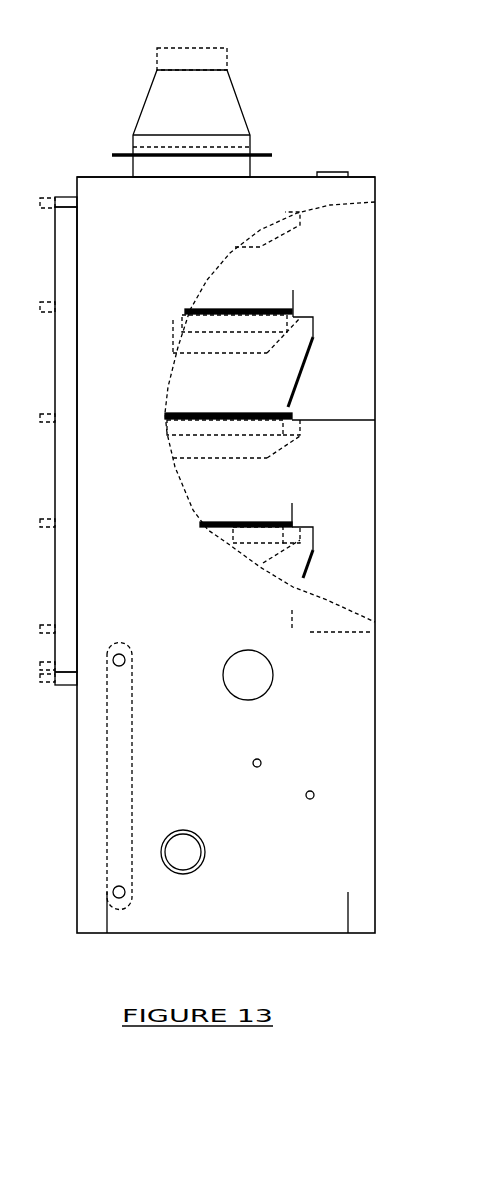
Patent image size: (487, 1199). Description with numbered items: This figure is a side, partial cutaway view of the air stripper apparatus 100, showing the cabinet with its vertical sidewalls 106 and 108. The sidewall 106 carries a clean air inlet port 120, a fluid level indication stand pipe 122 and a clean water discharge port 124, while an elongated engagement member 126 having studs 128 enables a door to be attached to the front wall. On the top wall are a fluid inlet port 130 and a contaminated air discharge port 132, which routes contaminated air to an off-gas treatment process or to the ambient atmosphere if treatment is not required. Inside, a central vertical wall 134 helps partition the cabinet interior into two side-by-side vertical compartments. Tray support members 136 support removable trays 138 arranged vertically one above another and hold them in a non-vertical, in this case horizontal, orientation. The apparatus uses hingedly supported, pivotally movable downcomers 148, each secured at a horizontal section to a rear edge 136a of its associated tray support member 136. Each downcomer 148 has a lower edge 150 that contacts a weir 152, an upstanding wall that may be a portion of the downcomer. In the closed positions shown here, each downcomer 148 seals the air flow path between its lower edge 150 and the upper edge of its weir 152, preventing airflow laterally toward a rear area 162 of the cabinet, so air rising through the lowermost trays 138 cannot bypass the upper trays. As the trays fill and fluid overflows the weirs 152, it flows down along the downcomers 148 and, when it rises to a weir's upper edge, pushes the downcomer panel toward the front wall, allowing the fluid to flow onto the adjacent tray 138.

The air stripper apparatus 100 is at (248, 491).
The vertical sidewall 106 is at (122, 212).
The vertical sidewall 108 is at (282, 176).
The clean air inlet port 120 is at (236, 655).
The fluid level indication stand pipe 122 is at (133, 742).
The clean water discharge port 124 is at (203, 841).
The elongated engagement member 126 is at (70, 250).
The studs 128 is at (46, 315).
The fluid inlet port 130 is at (335, 170).
The contaminated air discharge port 132 is at (180, 62).
The central vertical wall 134 is at (356, 436).
The tray support members 136 is at (206, 437).
The rear edge 136a is at (313, 317).
The removable trays 138 is at (210, 308).
The downcomers 148 is at (316, 366).
The lower edge 150 is at (288, 406).
The weir 152 is at (297, 295).
The rear area 162 is at (344, 533).